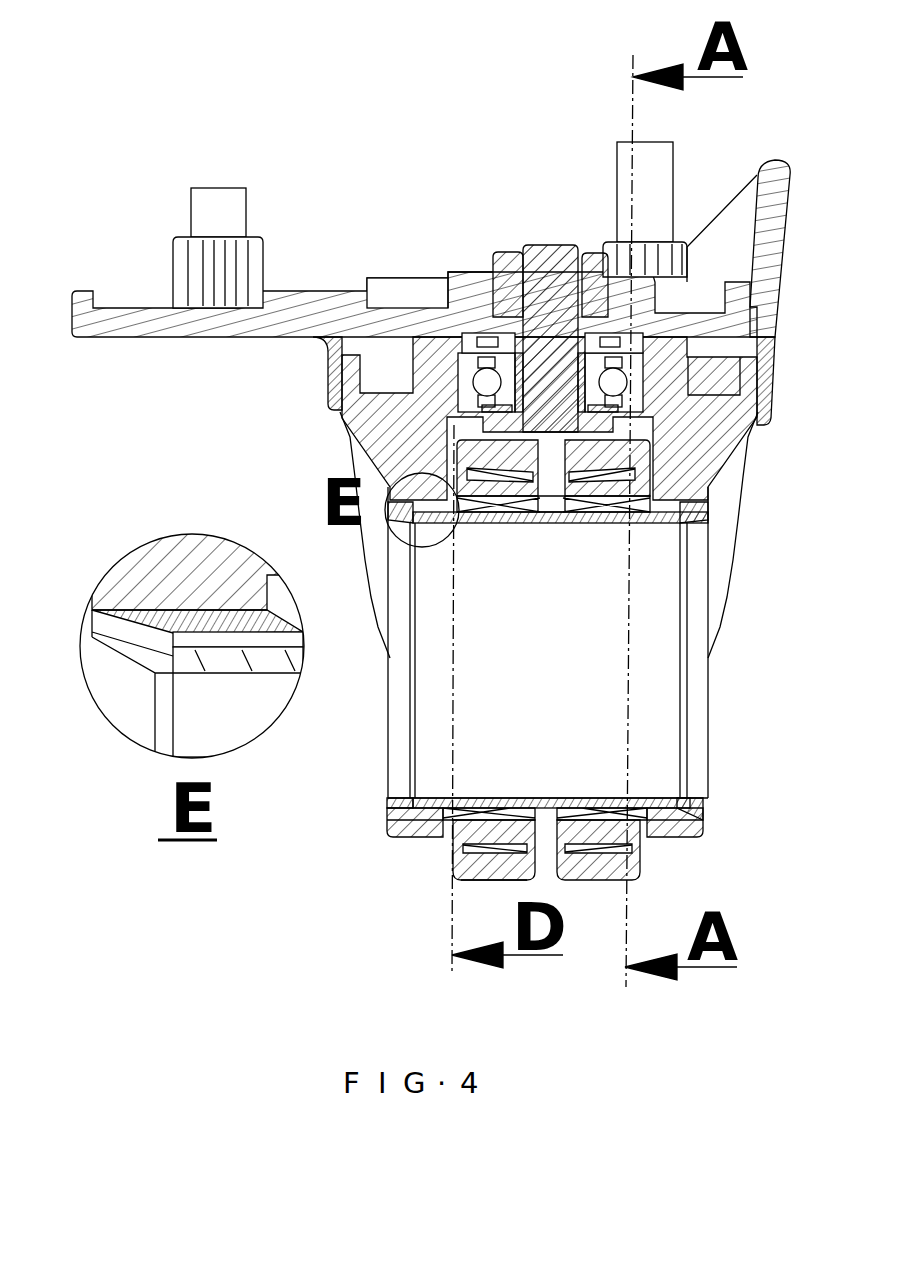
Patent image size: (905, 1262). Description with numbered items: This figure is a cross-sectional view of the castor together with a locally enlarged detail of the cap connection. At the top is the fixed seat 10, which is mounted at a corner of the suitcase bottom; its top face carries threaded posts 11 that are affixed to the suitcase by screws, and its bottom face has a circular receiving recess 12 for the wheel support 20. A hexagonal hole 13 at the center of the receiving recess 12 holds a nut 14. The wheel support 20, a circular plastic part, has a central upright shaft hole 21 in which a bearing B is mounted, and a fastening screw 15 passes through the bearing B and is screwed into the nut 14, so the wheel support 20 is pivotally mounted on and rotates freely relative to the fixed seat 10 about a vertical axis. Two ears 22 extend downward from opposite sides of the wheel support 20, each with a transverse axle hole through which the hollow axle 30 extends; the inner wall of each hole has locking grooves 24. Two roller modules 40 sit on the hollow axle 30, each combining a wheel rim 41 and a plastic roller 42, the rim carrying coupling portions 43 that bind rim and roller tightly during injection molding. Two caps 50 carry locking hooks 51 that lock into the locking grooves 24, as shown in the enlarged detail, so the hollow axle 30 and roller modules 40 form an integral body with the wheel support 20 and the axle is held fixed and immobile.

The fixed seat 10 is at (160, 325).
The threaded posts 11 is at (219, 195).
The receiving recess 12 is at (330, 385).
The hexagonal hole 13 is at (490, 293).
The nut 14 is at (505, 260).
The fastening screw 15 is at (552, 250).
The wheel support 20 is at (728, 435).
The upright shaft hole 21 is at (643, 376).
The ears 22 is at (697, 828).
The locking grooves 24 is at (265, 598).
The hollow axle 30 is at (425, 802).
The roller modules 40 is at (447, 870).
The wheel rim 41 is at (522, 815).
The roller 42 is at (478, 870).
The coupling portions 43 is at (492, 848).
The caps 50 is at (690, 808).
The locking hooks 51 is at (648, 815).
The bearing B is at (485, 380).